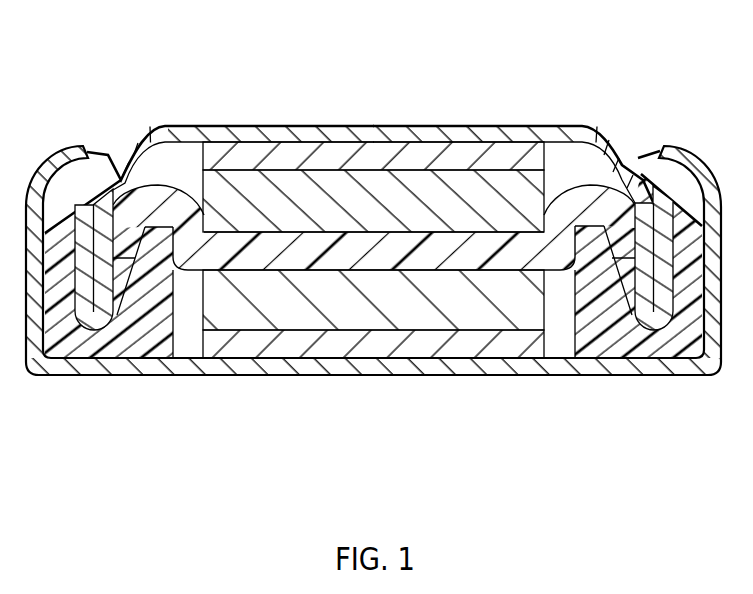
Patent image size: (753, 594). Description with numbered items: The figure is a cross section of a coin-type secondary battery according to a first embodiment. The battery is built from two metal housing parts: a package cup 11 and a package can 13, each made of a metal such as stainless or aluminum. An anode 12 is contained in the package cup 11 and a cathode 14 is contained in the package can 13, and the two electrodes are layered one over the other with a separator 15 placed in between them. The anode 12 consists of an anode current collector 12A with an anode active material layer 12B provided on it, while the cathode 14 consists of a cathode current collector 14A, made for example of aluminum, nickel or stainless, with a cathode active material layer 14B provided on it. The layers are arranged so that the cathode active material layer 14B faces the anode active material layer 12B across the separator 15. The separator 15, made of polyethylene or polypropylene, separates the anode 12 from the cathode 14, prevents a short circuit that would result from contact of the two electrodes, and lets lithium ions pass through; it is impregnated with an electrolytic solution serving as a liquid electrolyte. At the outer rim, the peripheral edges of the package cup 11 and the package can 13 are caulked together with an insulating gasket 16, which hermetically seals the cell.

The package cup 11 is at (197, 133).
The anode 12 is at (373, 127).
The anode current collector 12A is at (301, 153).
The anode active material layer 12B is at (282, 73).
The package can 13 is at (252, 367).
The cathode 14 is at (373, 380).
The cathode current collector 14A is at (513, 438).
The cathode active material layer 14B is at (482, 318).
The separator 15 is at (592, 195).
The insulating gasket 16 is at (134, 348).